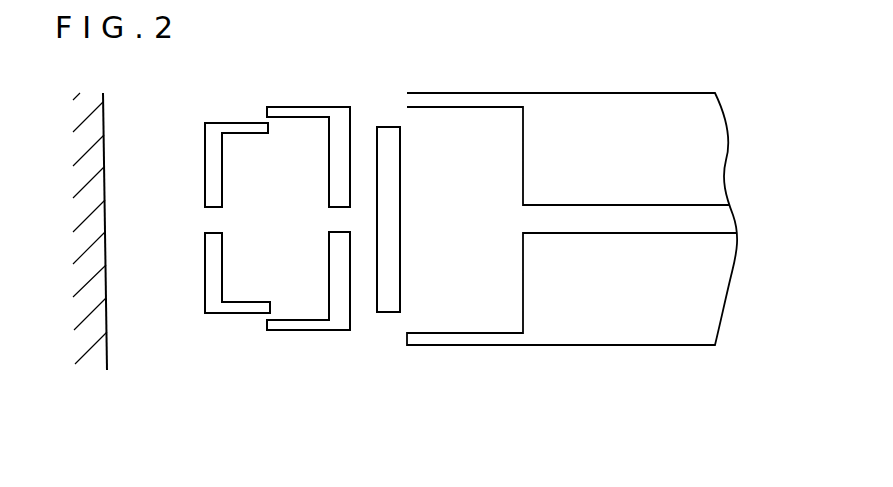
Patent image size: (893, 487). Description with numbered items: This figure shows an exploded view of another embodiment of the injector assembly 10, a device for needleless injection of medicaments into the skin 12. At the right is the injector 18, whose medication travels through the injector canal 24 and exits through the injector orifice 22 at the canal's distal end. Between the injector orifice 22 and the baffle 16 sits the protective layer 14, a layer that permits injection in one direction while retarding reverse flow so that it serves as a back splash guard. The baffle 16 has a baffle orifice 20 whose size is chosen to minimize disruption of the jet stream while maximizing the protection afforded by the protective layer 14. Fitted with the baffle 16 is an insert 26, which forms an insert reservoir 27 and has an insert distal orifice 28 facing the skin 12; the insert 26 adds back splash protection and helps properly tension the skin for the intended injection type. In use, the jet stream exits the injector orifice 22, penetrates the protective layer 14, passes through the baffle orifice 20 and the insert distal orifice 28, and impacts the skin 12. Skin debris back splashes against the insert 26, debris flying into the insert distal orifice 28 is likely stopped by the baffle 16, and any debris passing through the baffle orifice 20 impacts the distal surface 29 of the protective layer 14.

The injector assembly 10 is at (613, 360).
The skin 12 is at (108, 322).
The protective layer 14 is at (388, 127).
The baffle 16 is at (325, 332).
The injector 18 is at (637, 93).
The baffle orifice 20 is at (337, 220).
The injector orifice 22 is at (528, 219).
The injector canal 24 is at (699, 222).
The insert 26 is at (213, 307).
The insert reservoir 27 is at (240, 273).
The insert distal orifice 28 is at (208, 222).
The distal surface 29 is at (376, 145).